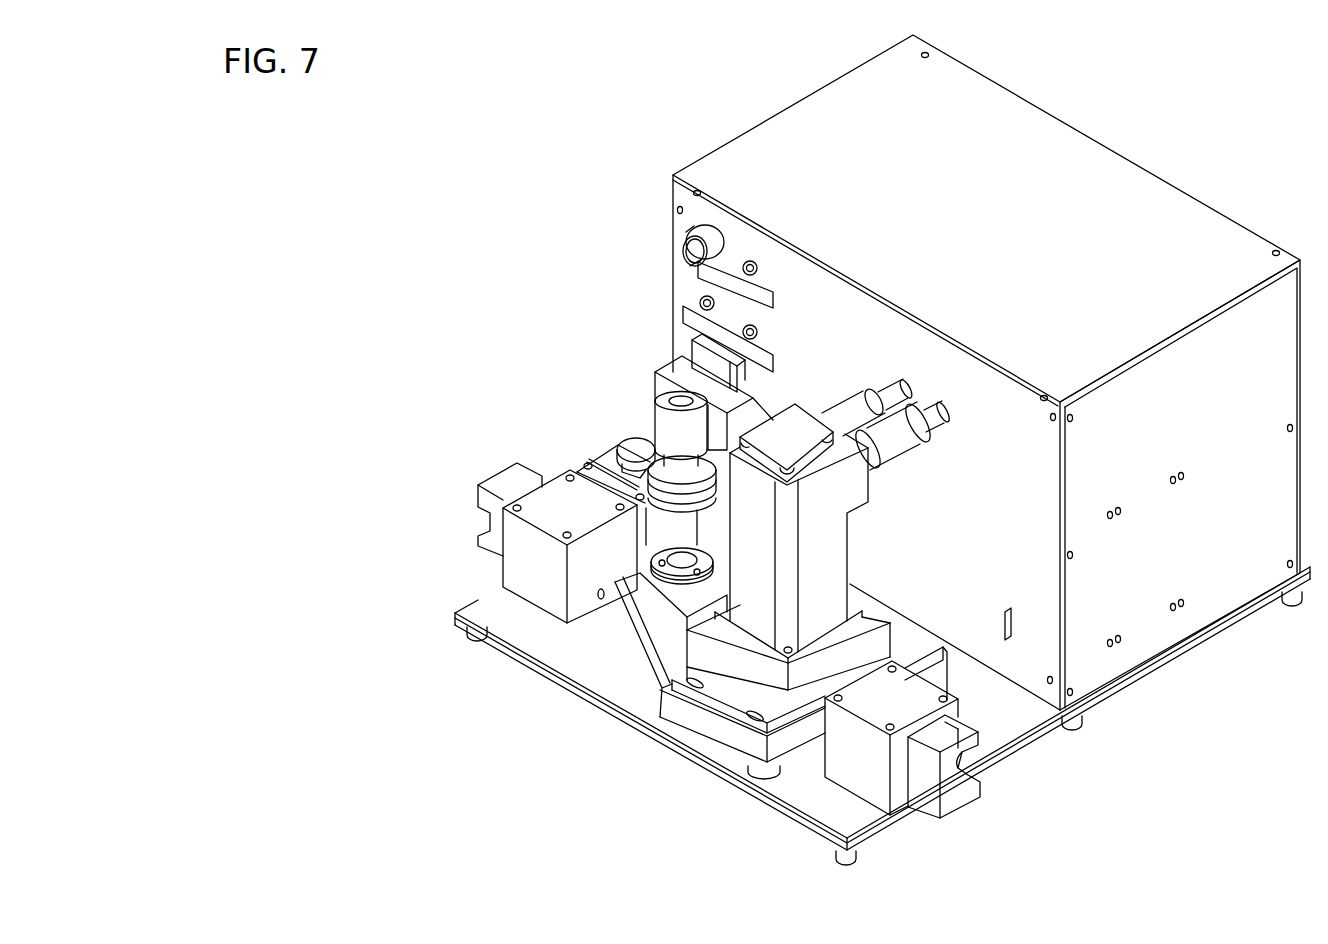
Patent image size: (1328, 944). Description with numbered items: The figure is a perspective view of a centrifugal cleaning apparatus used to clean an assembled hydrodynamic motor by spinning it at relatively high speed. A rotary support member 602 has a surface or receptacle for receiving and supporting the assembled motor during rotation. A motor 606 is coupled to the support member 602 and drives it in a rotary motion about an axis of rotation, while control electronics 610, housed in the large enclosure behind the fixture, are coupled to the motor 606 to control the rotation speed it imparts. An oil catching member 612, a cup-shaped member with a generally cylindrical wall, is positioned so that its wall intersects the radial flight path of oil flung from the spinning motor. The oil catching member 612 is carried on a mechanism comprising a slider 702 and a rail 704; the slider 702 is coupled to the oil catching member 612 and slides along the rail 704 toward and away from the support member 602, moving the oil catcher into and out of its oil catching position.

The rotary support member 602 is at (657, 568).
The motor 606 is at (832, 548).
The control electronics 610 is at (1115, 208).
The oil catching member 612 is at (660, 480).
The slider 702 is at (668, 360).
The rail 704 is at (676, 398).